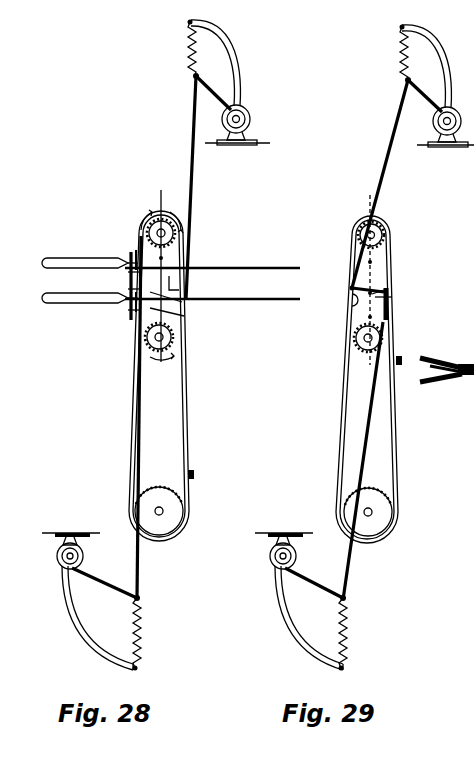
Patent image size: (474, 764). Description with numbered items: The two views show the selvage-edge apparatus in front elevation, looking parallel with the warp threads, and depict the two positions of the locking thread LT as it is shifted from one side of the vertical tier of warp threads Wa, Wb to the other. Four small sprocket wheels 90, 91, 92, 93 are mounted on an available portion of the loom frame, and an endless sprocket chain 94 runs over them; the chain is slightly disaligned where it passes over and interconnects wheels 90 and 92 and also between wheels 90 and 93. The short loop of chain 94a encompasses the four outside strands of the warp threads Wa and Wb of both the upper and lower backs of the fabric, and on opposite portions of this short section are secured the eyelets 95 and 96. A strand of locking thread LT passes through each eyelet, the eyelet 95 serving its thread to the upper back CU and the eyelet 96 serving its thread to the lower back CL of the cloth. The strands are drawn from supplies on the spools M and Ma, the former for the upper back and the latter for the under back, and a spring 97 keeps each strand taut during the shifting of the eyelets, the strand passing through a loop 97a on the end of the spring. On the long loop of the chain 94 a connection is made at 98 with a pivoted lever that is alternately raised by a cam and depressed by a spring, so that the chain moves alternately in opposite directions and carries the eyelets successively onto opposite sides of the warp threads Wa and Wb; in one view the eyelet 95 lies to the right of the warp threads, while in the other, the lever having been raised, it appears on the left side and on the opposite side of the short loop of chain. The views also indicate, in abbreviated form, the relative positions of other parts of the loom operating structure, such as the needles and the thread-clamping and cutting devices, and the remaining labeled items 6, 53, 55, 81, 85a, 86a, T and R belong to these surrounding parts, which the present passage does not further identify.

In FIG. 28, the rod 6 is at (63, 258).
In FIG. 28, the gripper jaw 53 is at (128, 275).
In FIG. 28, the gripper bar 55 is at (131, 252).
In FIG. 28, the clamp member 81 is at (134, 257).
In FIG. 29, the lever 85a is at (335, 8).
In FIG. 29, the lever 86a is at (291, 6).
In FIG. 28, the sprocket wheel 90 is at (178, 232).
In FIG. 29, the sprocket wheel 90 is at (382, 228).
In FIG. 28, the sprocket wheel 91 is at (178, 240).
In FIG. 29, the sprocket wheel 91 is at (385, 237).
In FIG. 28, the sprocket wheel 92 is at (146, 340).
In FIG. 29, the sprocket wheel 92 is at (360, 346).
In FIG. 28, the sprocket wheel 93 is at (175, 514).
In FIG. 29, the sprocket wheel 93 is at (385, 518).
In FIG. 28, the endless sprocket chain 94 is at (190, 405).
In FIG. 29, the endless sprocket chain 94 is at (343, 408).
In FIG. 29, the short loop of chain 94a is at (352, 302).
In FIG. 28, the eyelet 95 is at (179, 286).
In FIG. 29, the eyelet 95 is at (352, 288).
In FIG. 28, the eyelet 96 is at (130, 292).
In FIG. 29, the eyelet 96 is at (372, 294).
In FIG. 28, the spring 97 is at (188, 55).
In FIG. 29, the spring 97 is at (402, 55).
In FIG. 28, the loop 97a is at (194, 78).
In FIG. 29, the loop 97a is at (406, 82).
In FIG. 28, the connection 98 is at (196, 474).
In FIG. 29, the connection 98 is at (400, 356).
In FIG. 28, the locking thread LT is at (190, 184).
In FIG. 29, the locking thread LT is at (384, 163).
In FIG. 28, the thread T is at (271, 271).
In FIG. 28, the spool M is at (252, 118).
In FIG. 29, the spool M is at (472, 116).
In FIG. 28, the spool Ma is at (84, 558).
In FIG. 29, the spool Ma is at (297, 558).
In FIG. 29, the warp threads Wa is at (373, 264).
In FIG. 29, the warp threads Wb is at (385, 272).
In FIG. 29, the upper back CU is at (458, 362).
In FIG. 29, the lower back CL is at (460, 378).
In FIG. 29, the rod R is at (473, 420).